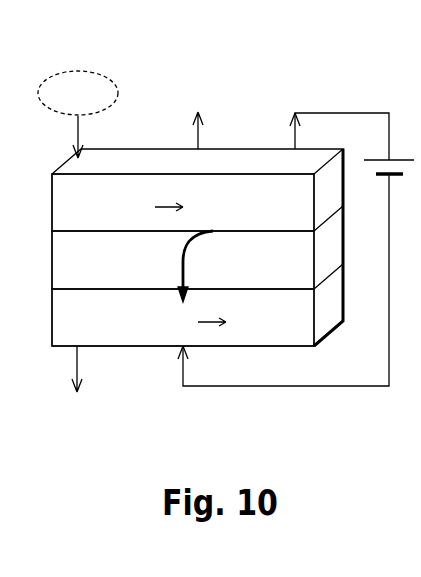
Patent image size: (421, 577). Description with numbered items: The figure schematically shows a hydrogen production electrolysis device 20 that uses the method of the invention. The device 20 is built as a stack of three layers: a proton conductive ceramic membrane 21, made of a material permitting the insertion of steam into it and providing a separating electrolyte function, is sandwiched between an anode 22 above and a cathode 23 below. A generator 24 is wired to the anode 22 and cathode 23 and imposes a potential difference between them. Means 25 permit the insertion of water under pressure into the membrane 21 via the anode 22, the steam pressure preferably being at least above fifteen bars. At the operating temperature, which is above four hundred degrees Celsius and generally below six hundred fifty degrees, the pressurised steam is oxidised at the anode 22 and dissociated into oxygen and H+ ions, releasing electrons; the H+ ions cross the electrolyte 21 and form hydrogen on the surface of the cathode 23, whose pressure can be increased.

The electrolysis device 20 is at (318, 100).
The proton conductive ceramic membrane 21 is at (85, 275).
The anode 22 is at (85, 217).
The cathode 23 is at (85, 333).
The generator 24 is at (380, 183).
The means permitting the insertion under pressure of water 25 is at (112, 75).